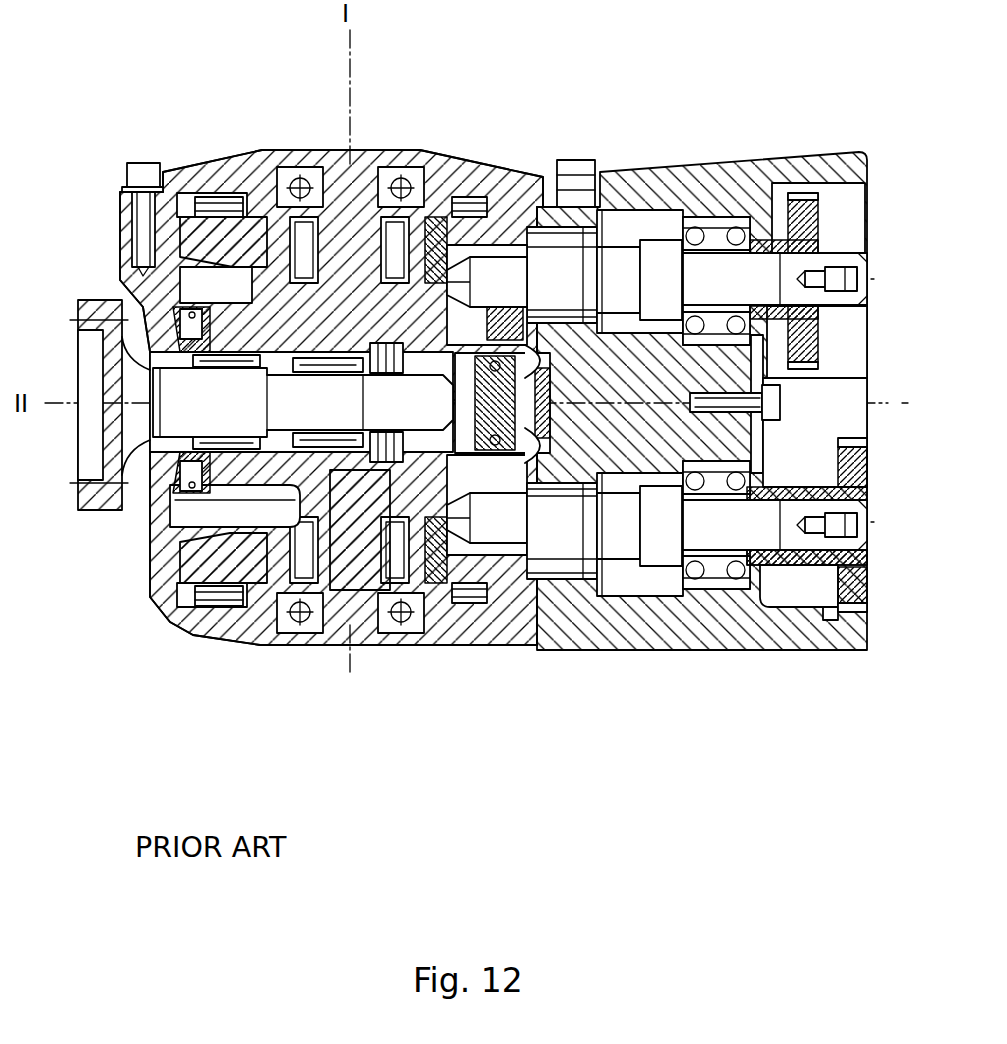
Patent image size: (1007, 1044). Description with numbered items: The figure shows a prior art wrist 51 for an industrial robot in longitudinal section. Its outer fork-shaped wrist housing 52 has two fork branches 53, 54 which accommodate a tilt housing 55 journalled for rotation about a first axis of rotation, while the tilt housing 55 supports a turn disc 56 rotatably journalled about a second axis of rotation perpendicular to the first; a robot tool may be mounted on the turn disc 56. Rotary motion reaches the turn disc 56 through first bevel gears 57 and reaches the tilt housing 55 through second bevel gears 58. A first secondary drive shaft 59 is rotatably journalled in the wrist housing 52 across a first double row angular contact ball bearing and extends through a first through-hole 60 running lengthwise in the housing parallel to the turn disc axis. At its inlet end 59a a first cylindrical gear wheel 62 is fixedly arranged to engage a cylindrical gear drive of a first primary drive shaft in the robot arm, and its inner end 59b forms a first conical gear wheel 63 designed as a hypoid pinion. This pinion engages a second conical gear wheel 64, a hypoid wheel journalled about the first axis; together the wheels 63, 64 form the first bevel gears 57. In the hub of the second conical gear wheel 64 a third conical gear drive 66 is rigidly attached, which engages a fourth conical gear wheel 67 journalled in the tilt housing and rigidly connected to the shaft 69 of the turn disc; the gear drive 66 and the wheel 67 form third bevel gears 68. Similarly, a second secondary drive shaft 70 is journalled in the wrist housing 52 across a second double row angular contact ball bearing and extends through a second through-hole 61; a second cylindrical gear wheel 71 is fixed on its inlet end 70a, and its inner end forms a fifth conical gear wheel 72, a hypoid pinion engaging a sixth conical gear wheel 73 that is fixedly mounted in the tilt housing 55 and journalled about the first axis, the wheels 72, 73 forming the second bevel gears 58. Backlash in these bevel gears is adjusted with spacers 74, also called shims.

The axial piston pump 51 is at (135, 672).
The wrist housing 52 is at (655, 235).
The fork branch 53 is at (260, 170).
The fork branch 54 is at (225, 625).
The tilt housing 55 is at (365, 565).
The turn disc 56 is at (113, 455).
The first bevel gears 57 is at (517, 280).
The second bevel gears 58 is at (545, 525).
The first secondary drive shaft 59 is at (753, 267).
The inlet end 59a is at (847, 262).
The inner end 59b is at (560, 270).
The first through-hole 60 is at (660, 258).
The second through-hole 61 is at (657, 550).
The first cylindrical gear wheel 62 is at (808, 217).
The first conical gear wheel 63 is at (460, 273).
The second conical gear wheel 64 is at (438, 212).
The third conical gear drive 66 is at (298, 168).
The fourth conical gear wheel 67 is at (440, 547).
The third bevel gears 68 is at (385, 168).
The shaft of the turn disc 69 is at (318, 412).
The second secondary drive shaft 70 is at (745, 548).
The inlet end 70a is at (820, 552).
The second cylindrical gear wheel 71 is at (847, 590).
The fifth conical gear wheel 72 is at (513, 540).
The sixth conical gear wheel 73 is at (480, 555).
The spacers 74 is at (219, 571).